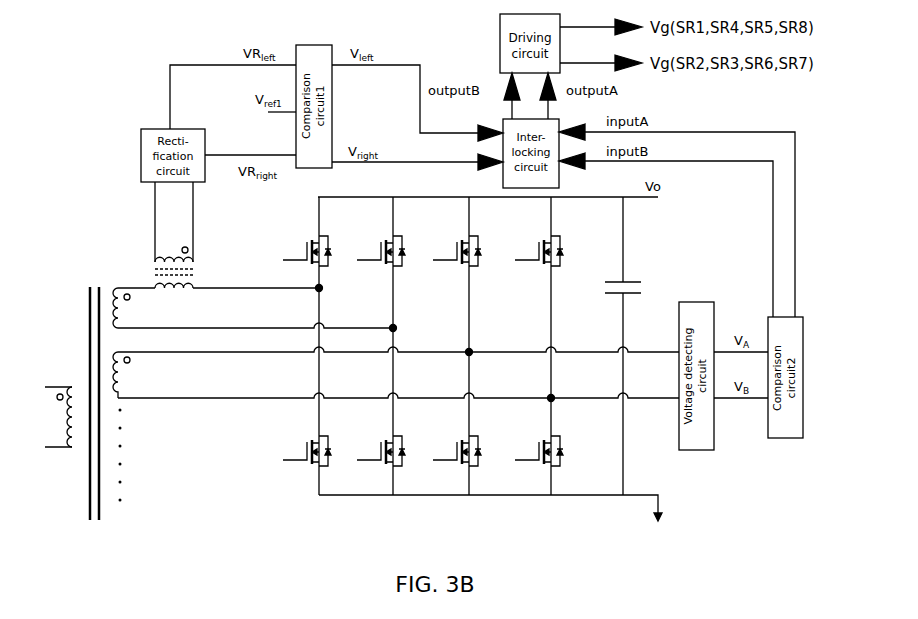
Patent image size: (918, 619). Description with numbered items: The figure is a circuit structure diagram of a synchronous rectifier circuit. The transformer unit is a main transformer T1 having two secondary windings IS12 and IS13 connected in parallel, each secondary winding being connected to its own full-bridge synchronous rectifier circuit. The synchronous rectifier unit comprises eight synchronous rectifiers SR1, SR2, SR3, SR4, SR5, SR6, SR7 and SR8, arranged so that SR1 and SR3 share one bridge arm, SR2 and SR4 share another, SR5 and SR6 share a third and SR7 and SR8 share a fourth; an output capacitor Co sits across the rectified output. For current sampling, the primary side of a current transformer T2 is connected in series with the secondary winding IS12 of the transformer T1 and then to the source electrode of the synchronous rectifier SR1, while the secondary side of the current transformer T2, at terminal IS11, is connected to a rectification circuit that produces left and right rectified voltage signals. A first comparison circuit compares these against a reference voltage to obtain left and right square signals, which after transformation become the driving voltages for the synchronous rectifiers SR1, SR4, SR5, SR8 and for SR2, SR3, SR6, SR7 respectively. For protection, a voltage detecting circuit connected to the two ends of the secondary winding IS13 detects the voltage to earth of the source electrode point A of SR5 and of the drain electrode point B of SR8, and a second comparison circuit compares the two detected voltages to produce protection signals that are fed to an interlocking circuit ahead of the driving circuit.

The synchronous rectifier SR1 is at (301, 243).
The synchronous rectifier SR2 is at (374, 243).
The synchronous rectifier SR3 is at (301, 443).
The synchronous rectifier SR4 is at (374, 443).
The synchronous rectifier SR5 is at (449, 243).
The synchronous rectifier SR6 is at (530, 243).
The synchronous rectifier SR7 is at (449, 443).
The synchronous rectifier SR8 is at (530, 443).
The secondary terminal of the current transformer IS11 is at (188, 250).
The secondary winding IS12 is at (112, 291).
The secondary winding IS13 is at (144, 394).
The transformer T1 is at (98, 415).
The current transformer T2 is at (257, 300).
The output capacitor Co is at (636, 346).
The source electrode point A is at (476, 343).
The drain electrode point B is at (560, 408).